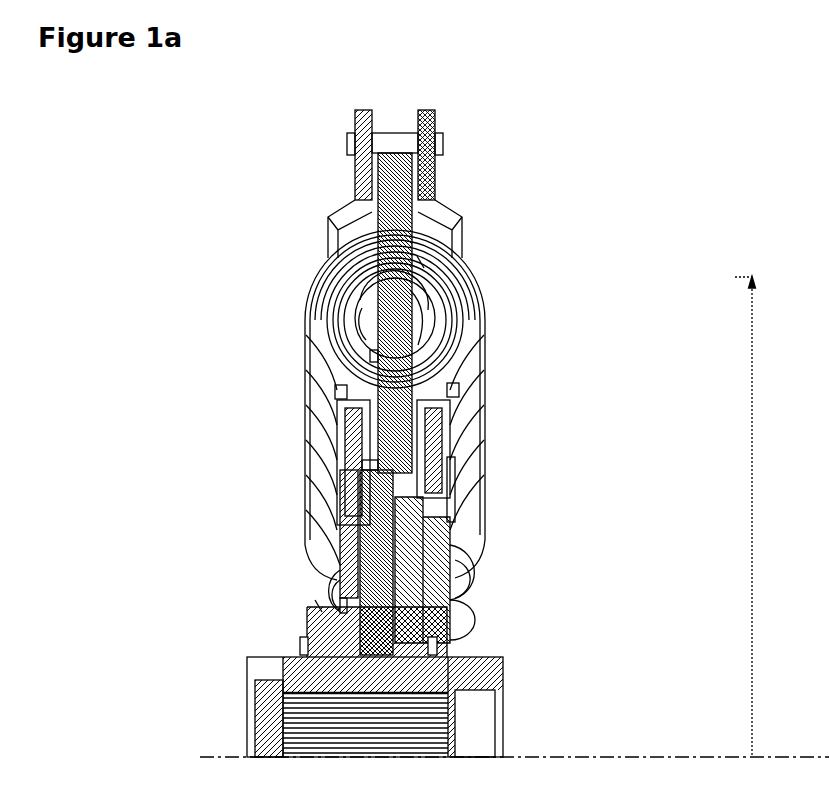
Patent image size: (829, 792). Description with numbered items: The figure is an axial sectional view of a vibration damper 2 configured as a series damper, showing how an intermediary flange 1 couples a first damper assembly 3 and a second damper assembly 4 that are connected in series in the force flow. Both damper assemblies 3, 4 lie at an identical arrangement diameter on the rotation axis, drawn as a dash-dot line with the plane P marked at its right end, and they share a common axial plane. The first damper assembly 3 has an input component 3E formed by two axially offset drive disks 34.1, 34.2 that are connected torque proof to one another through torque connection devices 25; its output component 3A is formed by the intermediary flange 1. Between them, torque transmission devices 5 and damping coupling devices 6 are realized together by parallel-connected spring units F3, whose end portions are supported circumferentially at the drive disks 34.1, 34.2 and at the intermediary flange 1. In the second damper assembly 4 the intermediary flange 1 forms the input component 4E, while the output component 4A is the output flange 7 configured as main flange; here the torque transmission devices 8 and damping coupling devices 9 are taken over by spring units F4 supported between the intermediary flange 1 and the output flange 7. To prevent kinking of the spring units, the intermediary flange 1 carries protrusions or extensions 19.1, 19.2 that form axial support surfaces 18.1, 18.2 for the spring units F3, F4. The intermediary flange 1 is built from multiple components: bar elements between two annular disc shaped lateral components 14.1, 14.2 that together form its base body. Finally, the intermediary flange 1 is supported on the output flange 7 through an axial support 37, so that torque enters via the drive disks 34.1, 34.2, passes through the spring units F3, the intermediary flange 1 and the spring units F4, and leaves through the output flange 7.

The vibration damper 2 is at (318, 193).
The torque connection devices 25 is at (392, 133).
The drive disk 34.1 is at (367, 178).
The drive disk 34.2 is at (437, 125).
The input component 3E is at (440, 200).
The first damper assembly 3 is at (292, 302).
The output component 3A is at (397, 320).
The torque transmission devices 5 is at (462, 293).
The damping coupling devices 6 is at (437, 266).
The spring units F3 is at (422, 262).
The intermediary flange 1 is at (397, 303).
The axial support surface 18.2 is at (447, 385).
The axial support surface 18.1 is at (345, 388).
The input component 4E is at (390, 355).
The protrusion or extension 19.1 is at (377, 431).
The protrusion or extension 19.2 is at (427, 442).
The axial support 37 is at (362, 463).
The lateral component 14.2 is at (450, 522).
The lateral component 14.1 is at (353, 465).
The second damper assembly 4 is at (320, 566).
The torque transmission devices 8 is at (351, 592).
The damping coupling devices 9 is at (340, 600).
The spring units F4 is at (318, 605).
The output component 4A is at (377, 568).
The output flange 7 is at (403, 707).
The reference plane P is at (697, 760).